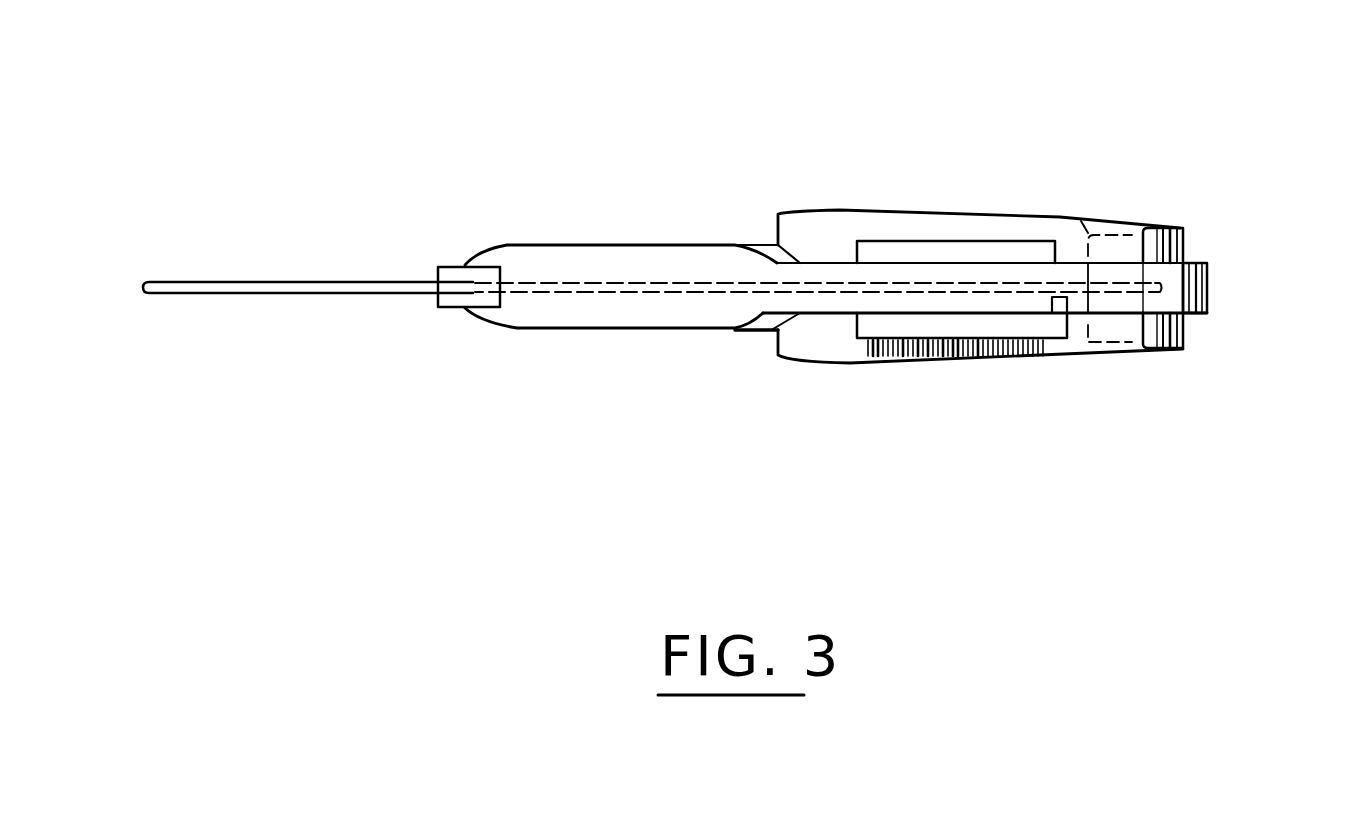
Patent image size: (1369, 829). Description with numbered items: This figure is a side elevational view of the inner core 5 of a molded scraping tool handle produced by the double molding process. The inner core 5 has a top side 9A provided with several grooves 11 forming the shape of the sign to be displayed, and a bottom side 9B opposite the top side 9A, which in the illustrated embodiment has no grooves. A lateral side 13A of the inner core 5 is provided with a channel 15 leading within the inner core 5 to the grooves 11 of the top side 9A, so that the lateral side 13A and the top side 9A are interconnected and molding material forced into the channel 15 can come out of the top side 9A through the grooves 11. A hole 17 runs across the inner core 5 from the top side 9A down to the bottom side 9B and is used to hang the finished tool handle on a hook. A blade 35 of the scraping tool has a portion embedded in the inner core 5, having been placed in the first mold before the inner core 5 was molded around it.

The inner core 5 is at (1247, 208).
The top side 9A is at (1018, 357).
The bottom side 9B is at (888, 206).
The grooves 11 is at (922, 358).
The lateral side 13A is at (944, 230).
The channel 15 is at (1040, 322).
The hole 17 is at (1125, 224).
The blade 35 is at (192, 281).